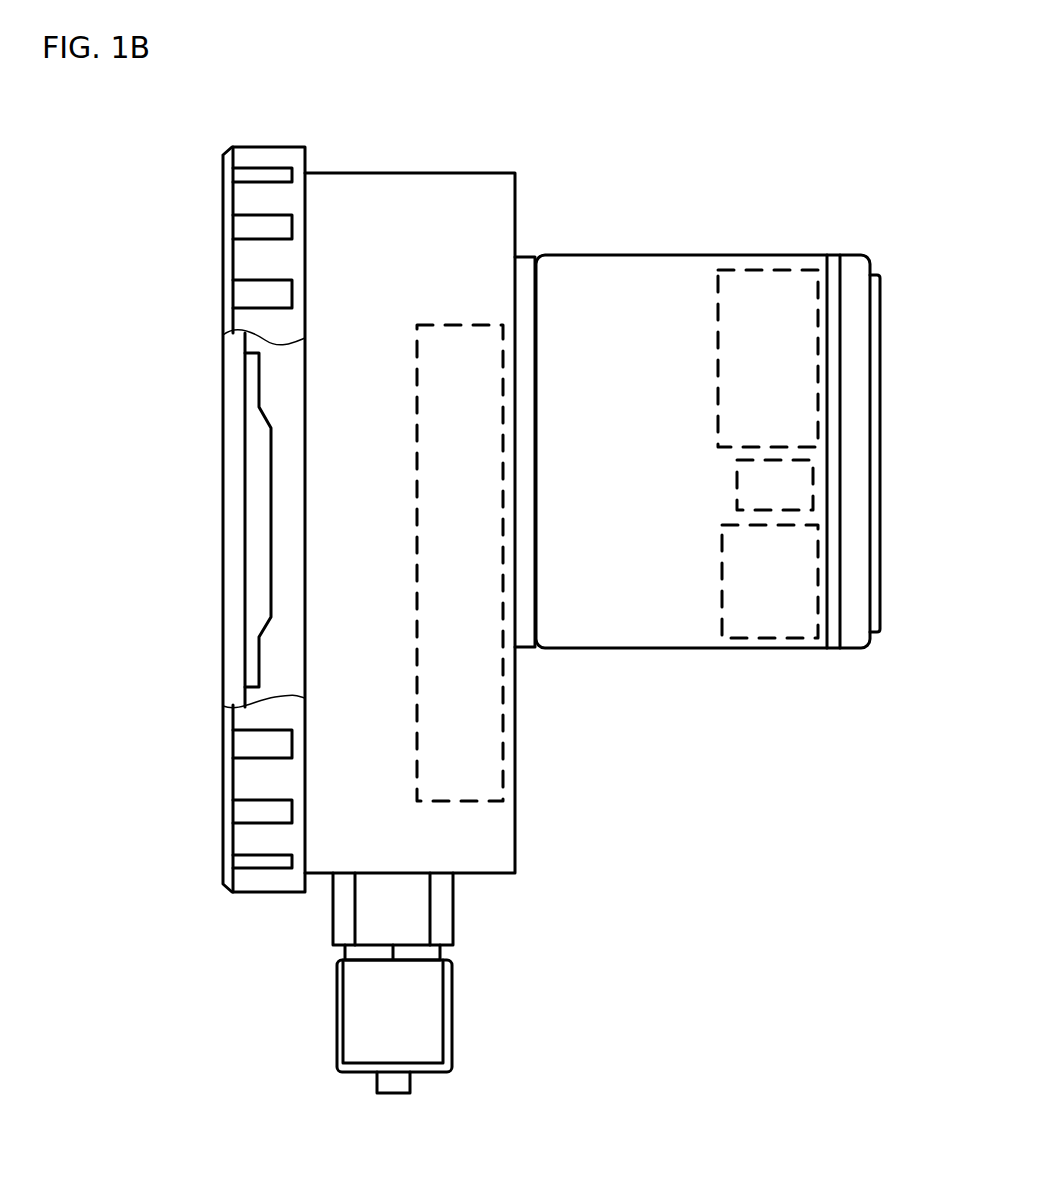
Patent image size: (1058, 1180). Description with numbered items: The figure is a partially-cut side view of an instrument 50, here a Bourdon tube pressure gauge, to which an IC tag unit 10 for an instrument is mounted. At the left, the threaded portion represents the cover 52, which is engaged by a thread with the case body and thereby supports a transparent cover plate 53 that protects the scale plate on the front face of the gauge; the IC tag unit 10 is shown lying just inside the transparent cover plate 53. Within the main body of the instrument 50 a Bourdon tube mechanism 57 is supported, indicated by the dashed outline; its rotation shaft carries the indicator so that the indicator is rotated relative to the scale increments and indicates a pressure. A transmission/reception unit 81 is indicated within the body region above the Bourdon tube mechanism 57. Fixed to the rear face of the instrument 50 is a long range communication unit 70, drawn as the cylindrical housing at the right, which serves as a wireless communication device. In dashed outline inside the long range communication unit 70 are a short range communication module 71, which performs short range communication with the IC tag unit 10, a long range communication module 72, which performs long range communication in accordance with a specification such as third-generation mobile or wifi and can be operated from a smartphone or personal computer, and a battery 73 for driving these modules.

The instrument 50 is at (495, 875).
The cover 52 is at (306, 155).
The transparent cover plate 53 is at (223, 372).
The IC tag unit 10 is at (257, 523).
The transmission/reception unit 81 is at (483, 295).
The Bourdon tube mechanism 57 is at (472, 765).
The long range communication unit 70 is at (653, 300).
The short range communication module 71 is at (780, 490).
The long range communication module 72 is at (780, 365).
The battery 73 is at (782, 570).